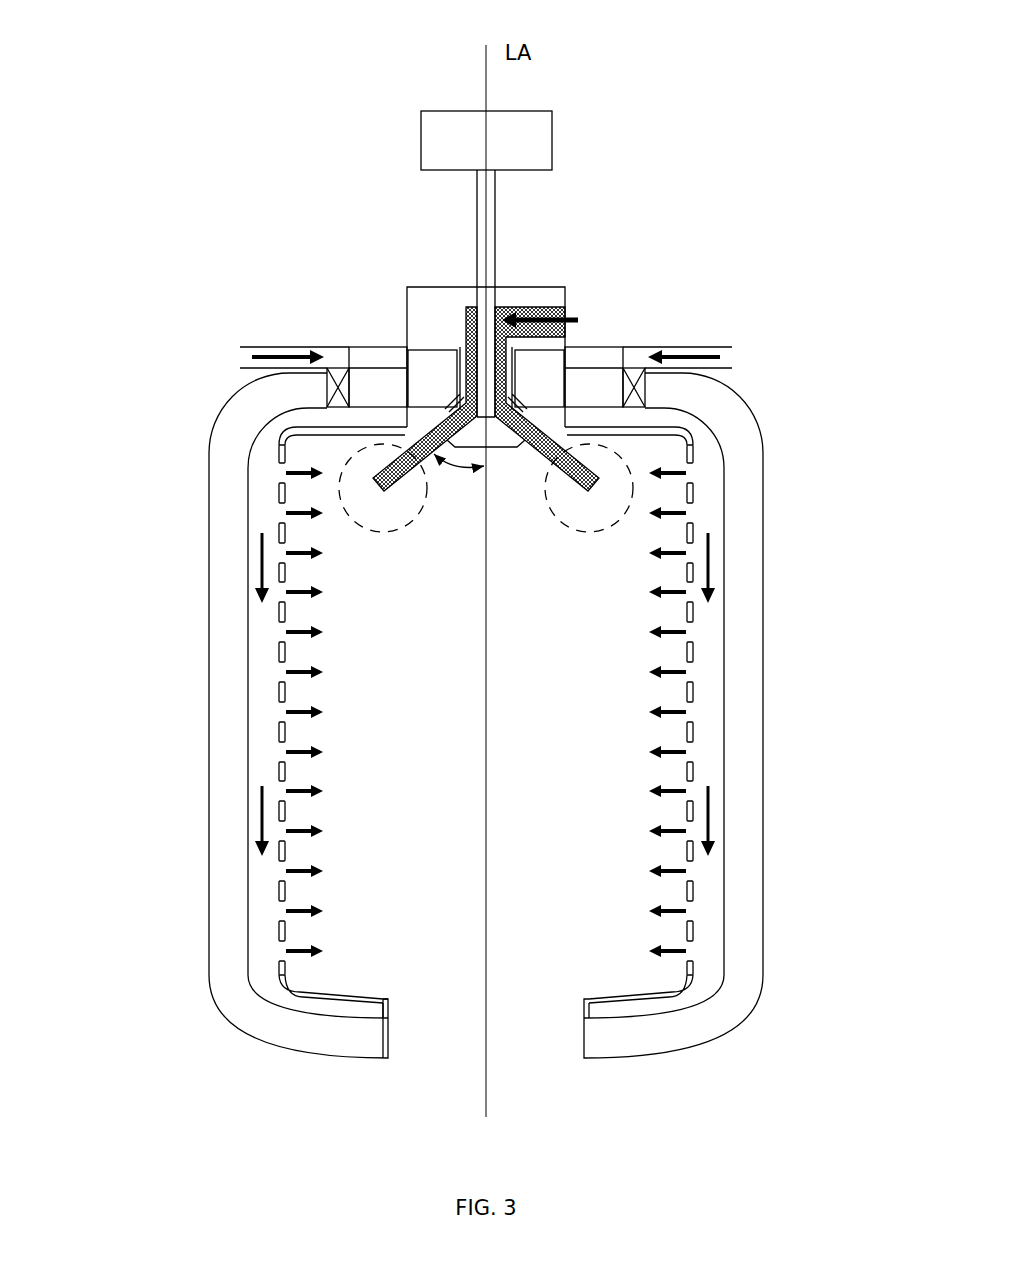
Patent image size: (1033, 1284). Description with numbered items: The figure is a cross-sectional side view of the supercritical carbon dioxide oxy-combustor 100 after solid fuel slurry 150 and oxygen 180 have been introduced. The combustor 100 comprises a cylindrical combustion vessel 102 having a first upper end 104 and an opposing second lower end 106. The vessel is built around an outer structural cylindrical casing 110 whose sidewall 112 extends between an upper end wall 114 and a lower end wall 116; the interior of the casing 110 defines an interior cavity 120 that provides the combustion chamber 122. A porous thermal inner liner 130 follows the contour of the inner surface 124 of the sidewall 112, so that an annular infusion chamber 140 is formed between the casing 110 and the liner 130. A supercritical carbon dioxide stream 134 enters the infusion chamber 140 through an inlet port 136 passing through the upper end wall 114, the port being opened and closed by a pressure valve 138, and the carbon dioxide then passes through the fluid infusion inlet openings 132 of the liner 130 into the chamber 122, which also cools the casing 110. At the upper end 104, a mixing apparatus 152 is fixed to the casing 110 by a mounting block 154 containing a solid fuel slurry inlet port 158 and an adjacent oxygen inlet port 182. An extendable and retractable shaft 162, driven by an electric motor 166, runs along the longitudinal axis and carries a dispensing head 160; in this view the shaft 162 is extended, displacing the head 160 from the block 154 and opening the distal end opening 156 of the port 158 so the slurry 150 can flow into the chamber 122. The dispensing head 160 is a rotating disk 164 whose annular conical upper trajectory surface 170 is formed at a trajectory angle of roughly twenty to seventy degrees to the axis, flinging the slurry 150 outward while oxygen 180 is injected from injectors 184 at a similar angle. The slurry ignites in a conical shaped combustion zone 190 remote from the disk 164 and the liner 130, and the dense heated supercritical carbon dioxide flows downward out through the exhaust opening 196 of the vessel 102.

The supercritical carbon dioxide oxy-combustor 100 is at (173, 90).
The combustion vessel 102 is at (180, 293).
The first (upper) end 104 is at (748, 366).
The second (lower) end 106 is at (752, 1046).
The outer cylindrical casing 110 is at (200, 597).
The sidewall 112 is at (230, 712).
The upper end wall 114 is at (382, 385).
The lower end wall 116 is at (372, 1035).
The interior cavity 120 is at (640, 602).
The combustion chamber 122 is at (468, 702).
The inner surface of sidewall 124 is at (283, 906).
The porous thermal inner liner 130 is at (343, 1000).
The fluid infusion inlet openings 132 is at (297, 660).
The supercritical carbon dioxide stream 134 is at (247, 377).
The supercritical carbon dioxide inlet port 136 is at (338, 366).
The pressure valve 138 is at (327, 388).
The annular infusion chamber 140 is at (262, 522).
The solid fuel slurry 150 is at (548, 302).
The mixing apparatus 152 is at (380, 160).
The mounting block 154 is at (420, 303).
The distal end opening 156 is at (566, 342).
The solid fuel slurry inlet port 158 is at (465, 305).
The dispensing head 160 is at (510, 548).
The extendable and retractable shaft 162 is at (498, 204).
The rotating disk 164 is at (489, 445).
The electric motor 166 is at (553, 130).
The upper trajectory surface 170 is at (517, 440).
The oxygen 180 is at (368, 443).
The oxygen inlet port 182 is at (428, 342).
The injectors 184 is at (452, 402).
The conical shaped combustion zone 190 is at (398, 527).
The exhaust opening 196 is at (511, 1063).